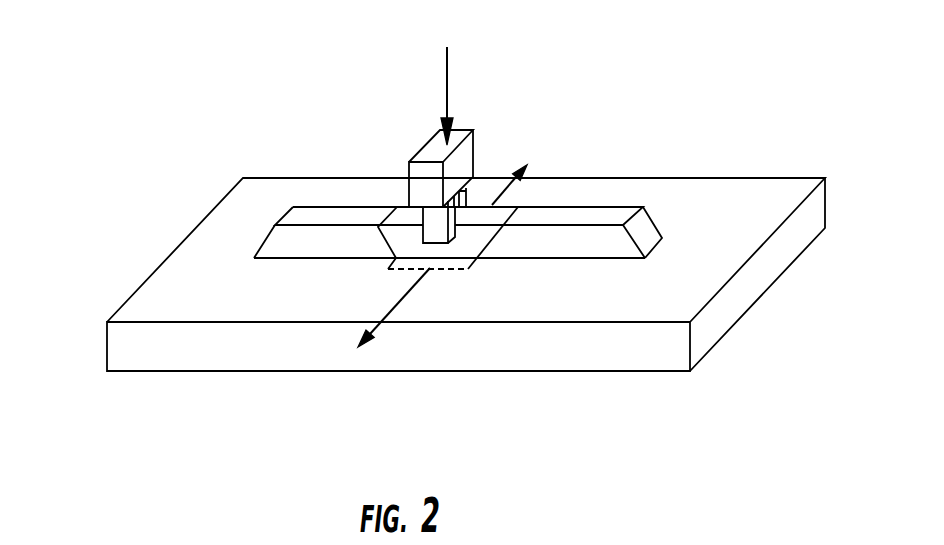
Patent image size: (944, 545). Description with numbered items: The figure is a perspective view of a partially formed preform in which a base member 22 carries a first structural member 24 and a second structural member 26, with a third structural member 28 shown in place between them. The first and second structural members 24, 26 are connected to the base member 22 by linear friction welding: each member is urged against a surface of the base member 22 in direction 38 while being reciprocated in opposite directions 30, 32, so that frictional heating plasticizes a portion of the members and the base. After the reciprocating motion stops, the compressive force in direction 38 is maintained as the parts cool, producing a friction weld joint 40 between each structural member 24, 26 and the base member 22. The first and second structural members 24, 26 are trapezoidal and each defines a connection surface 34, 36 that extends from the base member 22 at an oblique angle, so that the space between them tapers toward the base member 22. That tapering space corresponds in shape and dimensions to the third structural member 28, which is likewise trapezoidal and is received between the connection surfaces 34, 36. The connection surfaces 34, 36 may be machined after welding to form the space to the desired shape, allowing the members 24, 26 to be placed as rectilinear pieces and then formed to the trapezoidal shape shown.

The base member 22 is at (755, 202).
The first structural member 24 is at (272, 242).
The second structural member 26 is at (620, 243).
The third structural member 28 is at (397, 215).
The direction 30 is at (505, 188).
The direction 32 is at (395, 310).
The connection surface 34 is at (380, 238).
The connection surface 36 is at (488, 243).
The direction 38 is at (447, 77).
The friction weld joint 40 is at (302, 258).